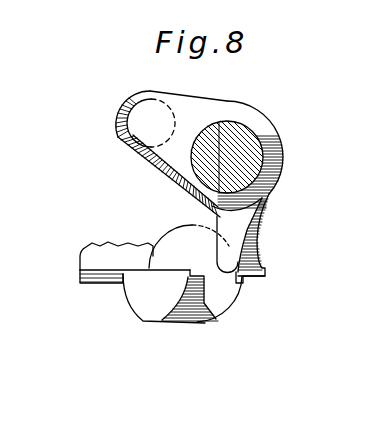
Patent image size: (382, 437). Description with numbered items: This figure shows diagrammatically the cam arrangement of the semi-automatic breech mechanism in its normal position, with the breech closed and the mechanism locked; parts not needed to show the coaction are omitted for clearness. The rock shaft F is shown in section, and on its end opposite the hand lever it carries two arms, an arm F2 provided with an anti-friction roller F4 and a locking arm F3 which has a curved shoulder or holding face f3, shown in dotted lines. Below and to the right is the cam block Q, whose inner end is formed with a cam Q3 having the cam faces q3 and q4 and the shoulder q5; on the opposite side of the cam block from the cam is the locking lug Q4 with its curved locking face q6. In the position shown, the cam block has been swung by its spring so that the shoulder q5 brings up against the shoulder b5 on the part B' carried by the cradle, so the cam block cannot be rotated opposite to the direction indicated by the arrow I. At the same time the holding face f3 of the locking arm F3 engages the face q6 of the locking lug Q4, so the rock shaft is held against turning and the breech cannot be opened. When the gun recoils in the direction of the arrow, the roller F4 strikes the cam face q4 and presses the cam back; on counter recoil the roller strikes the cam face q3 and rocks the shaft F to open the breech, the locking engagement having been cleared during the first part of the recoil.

The rock shaft F is at (233, 121).
The arm F2 is at (165, 152).
The locking arm F3 is at (258, 228).
The anti-friction roller F4 is at (130, 100).
The curved shoulder f3 is at (250, 210).
The direction of movement I is at (295, 103).
The cam block Q is at (215, 290).
The cam Q3 is at (157, 303).
The locking lug Q4 is at (272, 197).
The cam face q3 is at (195, 324).
The cam face q4 is at (148, 270).
The shoulder q5 is at (130, 270).
The curved locking face q6 is at (244, 238).
The shoulder b5 is at (114, 276).
The part carried by the cradle B' is at (92, 249).